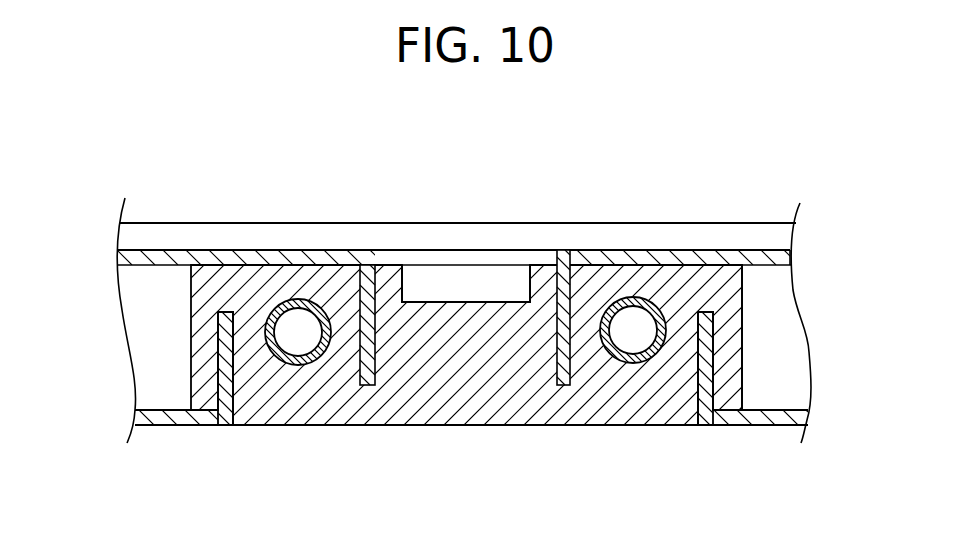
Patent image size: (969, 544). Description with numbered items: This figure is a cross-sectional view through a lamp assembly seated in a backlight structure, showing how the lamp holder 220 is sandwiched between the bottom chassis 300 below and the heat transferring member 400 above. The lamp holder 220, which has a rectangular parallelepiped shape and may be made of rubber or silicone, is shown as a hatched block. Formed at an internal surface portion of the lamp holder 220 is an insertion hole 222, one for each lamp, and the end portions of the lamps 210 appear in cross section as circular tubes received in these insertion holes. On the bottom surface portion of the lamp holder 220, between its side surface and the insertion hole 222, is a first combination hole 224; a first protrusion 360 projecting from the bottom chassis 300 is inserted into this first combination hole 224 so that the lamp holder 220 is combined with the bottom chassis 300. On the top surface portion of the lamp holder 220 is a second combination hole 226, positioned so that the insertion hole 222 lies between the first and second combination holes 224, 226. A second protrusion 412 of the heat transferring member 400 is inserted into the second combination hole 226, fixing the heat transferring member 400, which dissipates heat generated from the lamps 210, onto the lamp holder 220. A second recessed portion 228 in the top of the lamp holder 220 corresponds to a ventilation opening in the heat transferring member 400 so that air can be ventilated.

The heat transferring member 400 is at (270, 228).
The second recessed portion 228 is at (470, 275).
The lamp 210 is at (640, 298).
The insertion hole 222 is at (681, 277).
The first combination hole 224 is at (220, 345).
The second combination hole 226 is at (347, 382).
The lamp holder 220 is at (467, 395).
The second protrusion 412 is at (562, 387).
The first protrusion 360 is at (707, 348).
The bottom chassis 300 is at (743, 425).